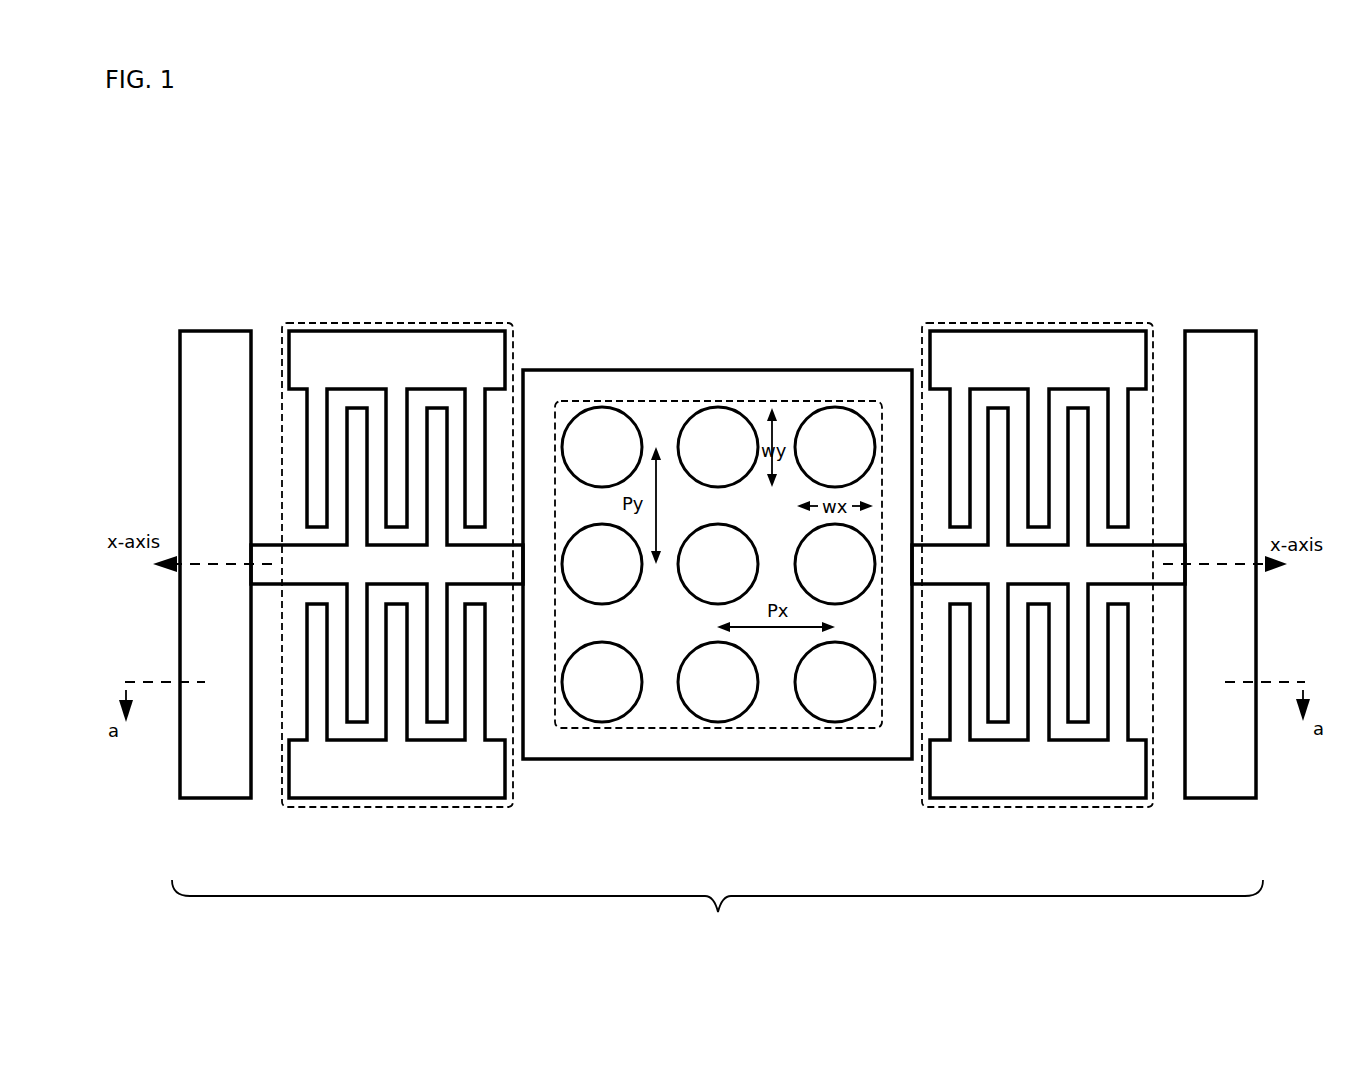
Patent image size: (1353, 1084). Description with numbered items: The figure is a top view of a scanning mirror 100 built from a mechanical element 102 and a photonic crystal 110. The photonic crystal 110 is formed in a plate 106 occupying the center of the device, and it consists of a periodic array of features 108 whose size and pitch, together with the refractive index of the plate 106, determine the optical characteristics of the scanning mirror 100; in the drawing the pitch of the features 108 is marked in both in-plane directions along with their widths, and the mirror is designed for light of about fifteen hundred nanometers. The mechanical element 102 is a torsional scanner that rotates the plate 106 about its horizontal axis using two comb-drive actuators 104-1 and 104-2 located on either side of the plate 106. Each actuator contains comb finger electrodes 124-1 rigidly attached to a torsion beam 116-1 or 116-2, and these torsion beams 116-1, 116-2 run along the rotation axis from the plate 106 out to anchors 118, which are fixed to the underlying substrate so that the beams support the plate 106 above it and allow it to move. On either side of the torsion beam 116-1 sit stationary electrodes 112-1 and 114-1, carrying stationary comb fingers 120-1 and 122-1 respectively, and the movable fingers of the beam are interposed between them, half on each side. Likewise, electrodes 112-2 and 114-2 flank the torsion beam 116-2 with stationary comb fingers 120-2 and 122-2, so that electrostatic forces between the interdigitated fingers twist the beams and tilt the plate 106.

The scanning mirror 100 is at (284, 193).
The mechanical element 102 is at (717, 915).
The actuator 104-1 is at (297, 807).
The actuator 104-2 is at (1132, 807).
The plate 106 is at (717, 368).
The features 108 is at (618, 458).
The photonic crystal 110 is at (770, 402).
The electrode 112-1 is at (354, 369).
The electrode 112-2 is at (1135, 369).
The electrode 114-1 is at (354, 781).
The electrode 114-2 is at (1135, 782).
The torsion beam 116-1 is at (375, 577).
The torsion beam 116-2 is at (1115, 577).
The anchors 118 is at (225, 786).
The stationary comb fingers 120-1 is at (318, 408).
The stationary comb fingers 120-2 is at (1118, 408).
The stationary comb fingers 122-1 is at (317, 722).
The stationary comb fingers 122-2 is at (1118, 722).
The comb finger electrodes 124-1 is at (437, 632).